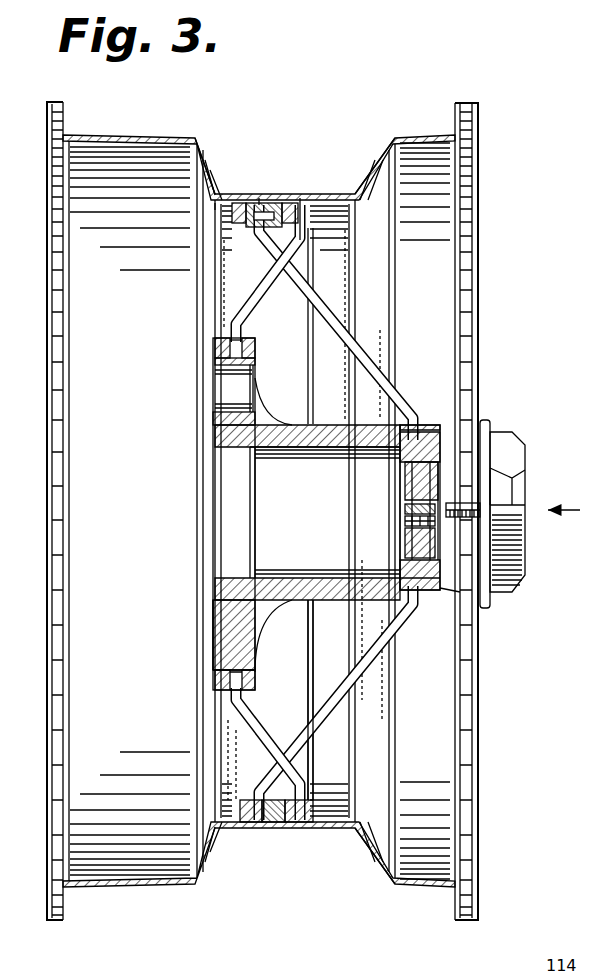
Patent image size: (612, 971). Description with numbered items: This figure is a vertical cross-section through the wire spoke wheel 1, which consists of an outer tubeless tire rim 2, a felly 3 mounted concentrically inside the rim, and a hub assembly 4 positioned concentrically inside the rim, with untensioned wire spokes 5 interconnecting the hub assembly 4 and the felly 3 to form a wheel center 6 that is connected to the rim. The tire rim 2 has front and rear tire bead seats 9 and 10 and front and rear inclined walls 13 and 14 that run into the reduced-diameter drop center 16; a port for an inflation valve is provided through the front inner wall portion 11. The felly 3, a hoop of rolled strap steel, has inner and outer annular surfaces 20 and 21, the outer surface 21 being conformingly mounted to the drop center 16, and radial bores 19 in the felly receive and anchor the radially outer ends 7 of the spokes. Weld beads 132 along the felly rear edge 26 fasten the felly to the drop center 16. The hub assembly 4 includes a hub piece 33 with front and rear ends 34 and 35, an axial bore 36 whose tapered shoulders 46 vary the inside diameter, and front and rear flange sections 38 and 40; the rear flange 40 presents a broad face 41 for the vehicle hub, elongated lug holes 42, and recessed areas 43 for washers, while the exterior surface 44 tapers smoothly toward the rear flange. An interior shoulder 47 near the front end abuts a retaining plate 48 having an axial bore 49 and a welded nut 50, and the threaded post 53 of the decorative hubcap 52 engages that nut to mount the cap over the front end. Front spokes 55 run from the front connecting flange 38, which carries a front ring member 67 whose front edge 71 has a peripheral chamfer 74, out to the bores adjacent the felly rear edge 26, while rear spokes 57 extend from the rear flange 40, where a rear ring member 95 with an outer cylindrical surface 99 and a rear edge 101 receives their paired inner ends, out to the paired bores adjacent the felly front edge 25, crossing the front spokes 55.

The wire spoke wheel 1 is at (503, 147).
The tubeless tire rim 2 is at (262, 496).
The felly 3 is at (273, 828).
The hub assembly 4 is at (313, 602).
The wire spokes 5 is at (286, 296).
The wheel center 6 is at (214, 638).
The radially outer ends 7 is at (262, 200).
The front tire bead seat 9 is at (462, 104).
The rear tire bead seat 10 is at (72, 108).
The front inner wall portion 11 is at (418, 890).
The front inclined wall 13 is at (372, 158).
The rear inclined wall 14 is at (202, 152).
The drop center 16 is at (276, 202).
The bores 19 is at (300, 210).
The inner annular surface 20 is at (313, 778).
The outer annular surface 21 is at (292, 826).
The felly front edge 25 is at (305, 210).
The felly rear edge 26 is at (232, 210).
The hub piece 33 is at (345, 424).
The hub front end 34 is at (440, 430).
The hub rear end 35 is at (214, 664).
The axial bore 36 is at (279, 505).
The front connecting flange section 38 is at (424, 602).
The rear flange section 40 is at (254, 668).
The broad face 41 is at (214, 606).
The lug holes 42 is at (214, 412).
The recessed areas 43 is at (264, 408).
The exterior surface 44 is at (288, 616).
The tapered shoulders 46 is at (222, 455).
The interior shoulder 47 is at (398, 588).
The retaining plate 48 is at (406, 544).
The axial bore 49 is at (404, 521).
The nut 50 is at (404, 510).
The hubcap 52 is at (505, 434).
The threaded post 53 is at (482, 506).
The front spokes 55 is at (381, 366).
The rear spokes 57 is at (232, 708).
The front ring member 67 is at (396, 434).
The front edge 71 is at (490, 590).
The chamfer 74 is at (438, 600).
The rear ring member 95 is at (214, 360).
The outer cylindrical surface 99 is at (214, 338).
The rear edge 101 is at (214, 684).
The weld beads 132 is at (238, 210).